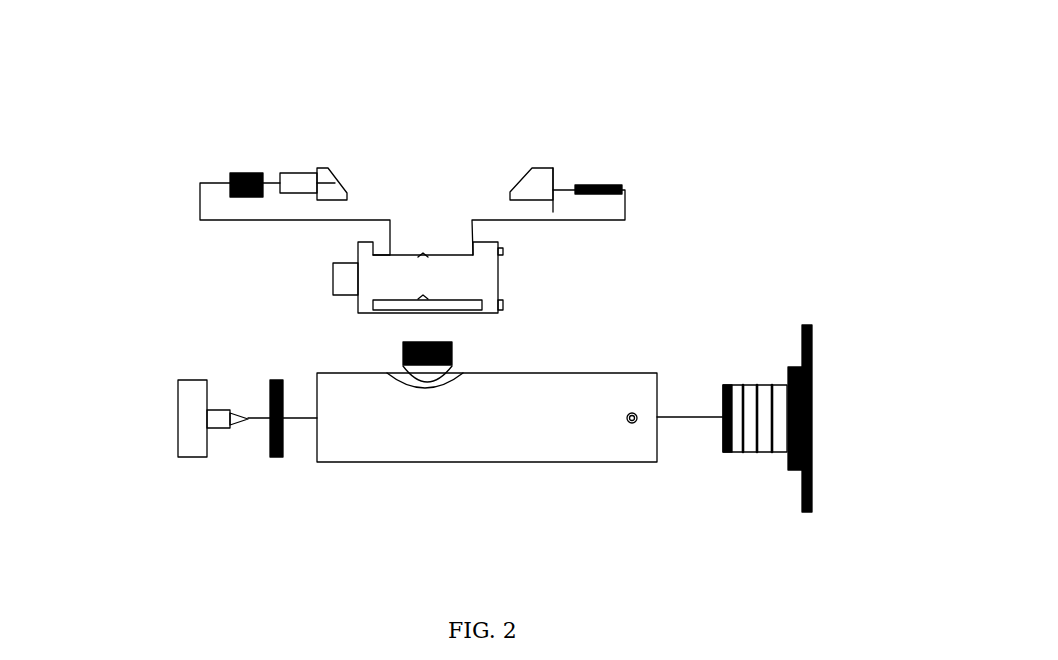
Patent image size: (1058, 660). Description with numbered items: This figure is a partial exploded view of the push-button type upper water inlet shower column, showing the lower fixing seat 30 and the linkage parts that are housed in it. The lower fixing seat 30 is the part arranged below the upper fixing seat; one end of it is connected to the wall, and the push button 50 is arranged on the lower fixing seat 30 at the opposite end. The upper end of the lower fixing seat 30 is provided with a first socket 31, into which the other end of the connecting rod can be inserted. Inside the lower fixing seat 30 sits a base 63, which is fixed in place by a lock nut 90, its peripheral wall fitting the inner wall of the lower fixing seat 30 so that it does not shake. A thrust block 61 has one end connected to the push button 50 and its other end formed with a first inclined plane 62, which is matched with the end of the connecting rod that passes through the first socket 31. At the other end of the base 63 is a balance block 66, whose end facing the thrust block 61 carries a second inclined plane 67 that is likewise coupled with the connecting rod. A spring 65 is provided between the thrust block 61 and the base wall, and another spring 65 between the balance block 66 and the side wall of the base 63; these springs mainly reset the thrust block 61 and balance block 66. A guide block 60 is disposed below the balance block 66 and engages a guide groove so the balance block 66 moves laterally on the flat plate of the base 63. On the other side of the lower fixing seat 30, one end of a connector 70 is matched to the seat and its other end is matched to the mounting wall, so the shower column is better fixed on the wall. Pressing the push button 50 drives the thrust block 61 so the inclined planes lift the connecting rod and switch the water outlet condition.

The lower fixing seat 30 is at (525, 442).
The first socket 31 is at (518, 329).
The push button 50 is at (192, 438).
The guide block 60 is at (553, 210).
The thrust block 61 is at (297, 183).
The first inclined plane 62 is at (325, 170).
The base 63 is at (533, 233).
The spring 65 is at (232, 173).
The balance block 66 is at (552, 210).
The second inclined plane 67 is at (522, 177).
The connector 70 is at (755, 450).
The lock nut 90 is at (275, 460).